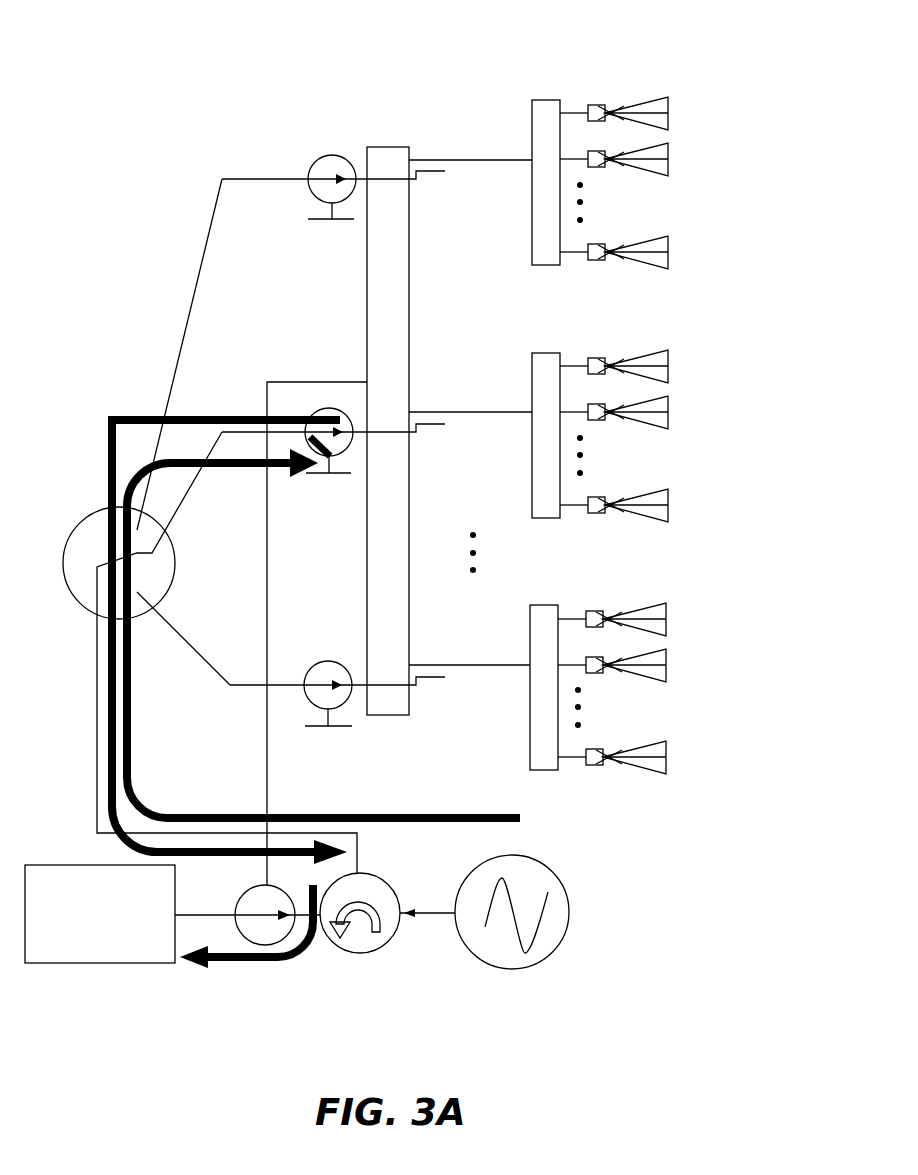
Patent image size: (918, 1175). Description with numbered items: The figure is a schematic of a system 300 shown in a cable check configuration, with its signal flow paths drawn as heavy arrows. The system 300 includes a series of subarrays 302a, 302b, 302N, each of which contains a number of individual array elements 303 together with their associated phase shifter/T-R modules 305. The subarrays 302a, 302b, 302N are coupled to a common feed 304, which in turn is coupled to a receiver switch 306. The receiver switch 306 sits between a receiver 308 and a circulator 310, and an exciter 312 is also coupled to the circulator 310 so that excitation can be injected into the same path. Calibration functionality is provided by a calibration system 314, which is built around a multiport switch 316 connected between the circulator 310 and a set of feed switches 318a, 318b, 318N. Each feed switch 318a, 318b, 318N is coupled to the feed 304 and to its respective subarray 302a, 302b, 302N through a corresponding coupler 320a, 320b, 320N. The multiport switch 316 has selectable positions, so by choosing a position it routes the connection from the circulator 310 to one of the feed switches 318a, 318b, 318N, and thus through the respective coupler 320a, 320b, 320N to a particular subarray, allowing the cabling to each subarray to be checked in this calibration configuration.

The system 300 is at (452, 54).
The subarray 302a is at (675, 92).
The subarray 302b is at (675, 345).
The subarray 302N is at (673, 597).
The array element 303 is at (655, 176).
The feed 304 is at (385, 147).
The phase shifter/T-R module 305 is at (597, 105).
The receiver switch 306 is at (265, 955).
The receiver 308 is at (110, 963).
The circulator 310 is at (357, 953).
The exciter 312 is at (512, 970).
The calibration system 314 is at (229, 748).
The multiport switch 316 is at (101, 512).
The feed switch 318a is at (319, 158).
The feed switch 318b is at (345, 450).
The feed switch 318N is at (318, 661).
The coupler 320a is at (432, 173).
The coupler 320b is at (432, 426).
The coupler 320N is at (432, 679).